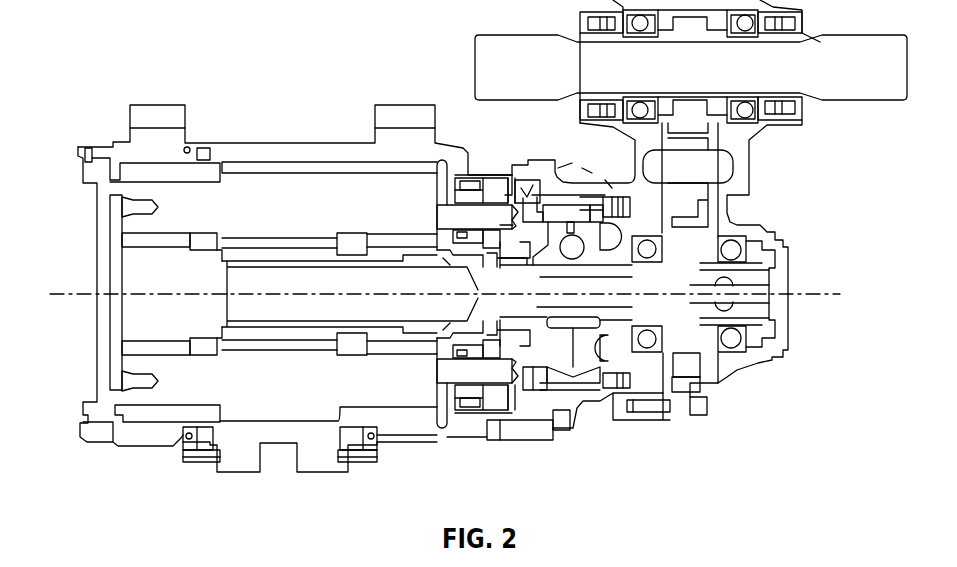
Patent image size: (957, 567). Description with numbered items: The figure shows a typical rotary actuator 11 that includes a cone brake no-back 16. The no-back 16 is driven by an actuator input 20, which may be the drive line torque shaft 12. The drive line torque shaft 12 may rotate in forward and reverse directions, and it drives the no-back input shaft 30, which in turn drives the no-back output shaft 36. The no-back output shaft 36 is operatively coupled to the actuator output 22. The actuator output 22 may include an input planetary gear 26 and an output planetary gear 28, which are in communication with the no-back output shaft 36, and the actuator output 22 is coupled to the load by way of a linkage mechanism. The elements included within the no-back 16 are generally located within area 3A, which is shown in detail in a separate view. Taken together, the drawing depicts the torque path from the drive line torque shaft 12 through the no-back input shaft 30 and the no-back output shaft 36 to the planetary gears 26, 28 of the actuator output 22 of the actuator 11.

The actuator 11 is at (333, 90).
The drive line torque shaft 12 is at (517, 33).
The no-back 16 is at (627, 373).
The actuator input 20 is at (436, 63).
The actuator output 22 is at (217, 124).
The input planetary gear 26 is at (465, 414).
The output planetary gear 28 is at (292, 426).
The no-back input shaft 30 is at (605, 275).
The no-back output shaft 36 is at (540, 296).
The area A 3A is at (575, 393).